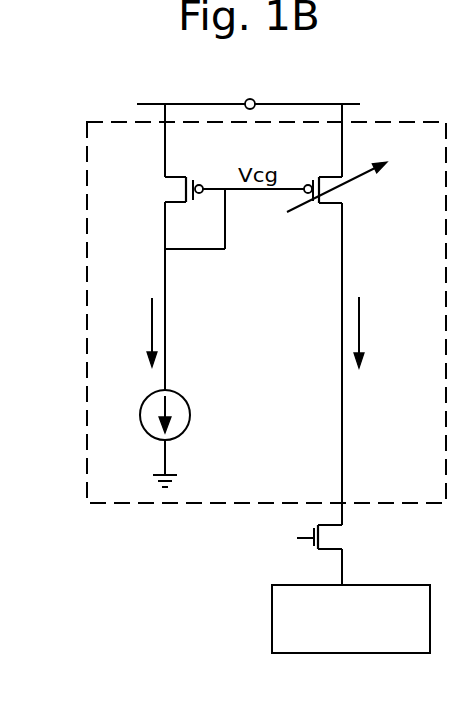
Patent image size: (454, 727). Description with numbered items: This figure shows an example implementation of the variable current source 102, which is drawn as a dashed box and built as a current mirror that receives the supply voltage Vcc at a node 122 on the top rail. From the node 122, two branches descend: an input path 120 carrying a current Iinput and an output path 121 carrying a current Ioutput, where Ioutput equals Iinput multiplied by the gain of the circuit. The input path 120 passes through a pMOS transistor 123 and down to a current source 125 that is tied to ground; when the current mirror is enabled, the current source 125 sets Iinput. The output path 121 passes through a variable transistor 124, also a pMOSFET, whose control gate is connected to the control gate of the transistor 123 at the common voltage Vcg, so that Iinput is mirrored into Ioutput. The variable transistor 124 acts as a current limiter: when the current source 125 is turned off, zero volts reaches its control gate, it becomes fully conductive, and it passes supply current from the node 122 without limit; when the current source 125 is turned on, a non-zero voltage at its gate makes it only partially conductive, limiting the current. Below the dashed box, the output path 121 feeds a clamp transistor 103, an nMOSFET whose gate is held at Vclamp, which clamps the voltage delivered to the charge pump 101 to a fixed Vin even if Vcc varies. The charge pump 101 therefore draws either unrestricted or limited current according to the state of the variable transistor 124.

The charge pump 101 is at (351, 619).
The variable current source 102 is at (74, 237).
The clamp transistor 103 is at (332, 551).
The input path 120 is at (179, 352).
The output path 121 is at (361, 434).
The node 122 is at (257, 101).
The transistor 123 is at (176, 177).
The variable transistor 124 is at (333, 176).
The current source 125 is at (185, 432).